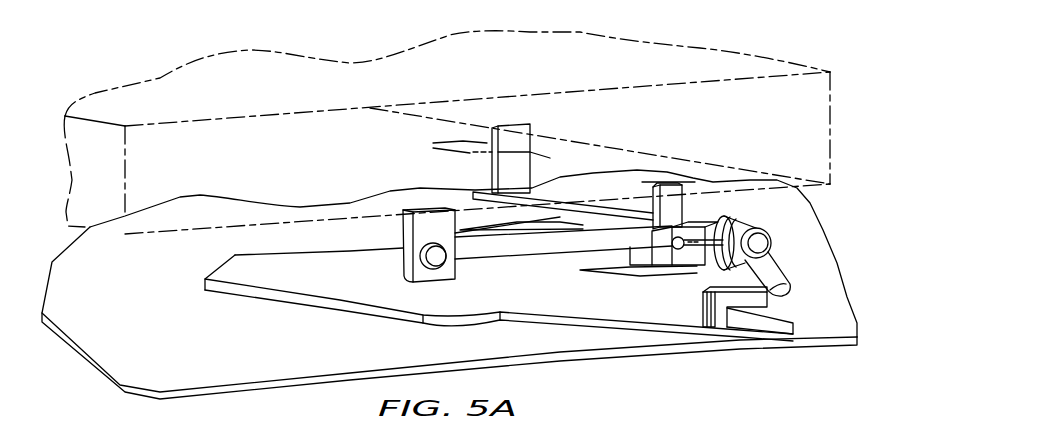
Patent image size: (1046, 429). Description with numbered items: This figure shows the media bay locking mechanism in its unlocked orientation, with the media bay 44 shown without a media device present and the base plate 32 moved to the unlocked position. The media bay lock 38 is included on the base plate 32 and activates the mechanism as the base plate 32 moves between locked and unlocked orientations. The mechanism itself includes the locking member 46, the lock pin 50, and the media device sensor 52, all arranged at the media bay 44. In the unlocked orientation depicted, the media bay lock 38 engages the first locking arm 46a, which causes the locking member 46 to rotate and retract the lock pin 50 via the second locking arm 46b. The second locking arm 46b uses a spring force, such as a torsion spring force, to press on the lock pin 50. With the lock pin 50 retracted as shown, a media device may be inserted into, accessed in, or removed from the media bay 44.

The base plate 32 is at (562, 312).
The media bay lock 38 is at (703, 298).
The media bay 44 is at (737, 62).
The locking member 46 is at (757, 222).
The first locking arm 46a is at (787, 289).
The second locking arm 46b is at (684, 237).
The lock pin 50 is at (668, 200).
The media device sensor 52 is at (523, 131).